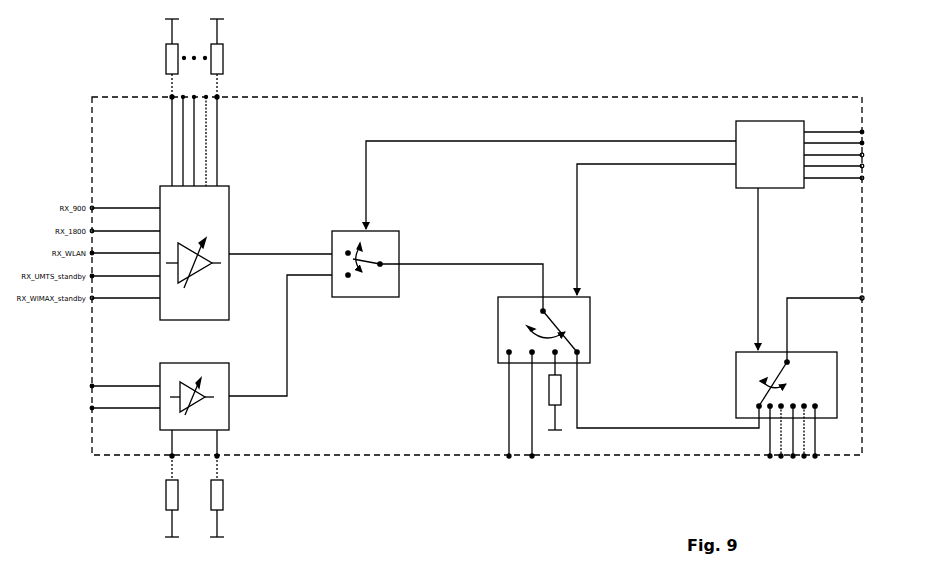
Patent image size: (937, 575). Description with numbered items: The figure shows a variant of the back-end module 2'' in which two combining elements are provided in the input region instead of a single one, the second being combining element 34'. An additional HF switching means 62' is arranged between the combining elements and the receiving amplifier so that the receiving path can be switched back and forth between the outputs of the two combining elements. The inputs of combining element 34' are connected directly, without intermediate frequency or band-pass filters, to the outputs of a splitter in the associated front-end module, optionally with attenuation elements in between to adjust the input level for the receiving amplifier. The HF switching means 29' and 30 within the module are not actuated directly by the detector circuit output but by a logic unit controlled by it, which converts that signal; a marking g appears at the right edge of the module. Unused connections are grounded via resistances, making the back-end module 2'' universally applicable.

The back-end module 2'' is at (477, 276).
The combining element 34' is at (182, 352).
The HF switching means 62' is at (534, 226).
The HF switching means 30 is at (590, 304).
The HF switching means 29' is at (775, 342).
The control signal g is at (814, 190).